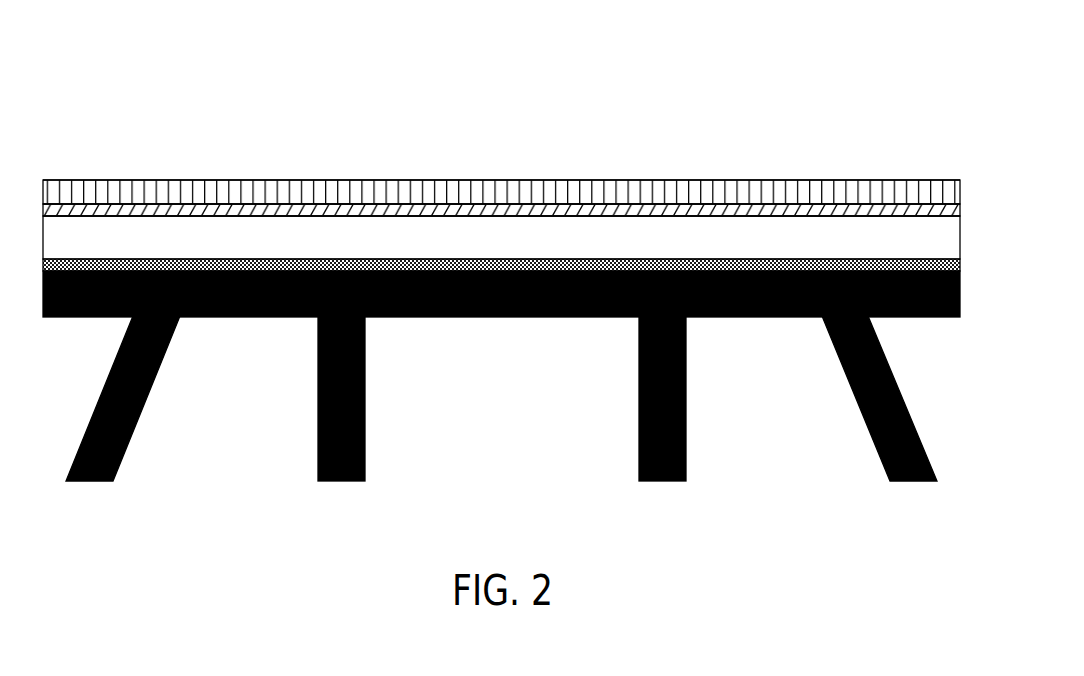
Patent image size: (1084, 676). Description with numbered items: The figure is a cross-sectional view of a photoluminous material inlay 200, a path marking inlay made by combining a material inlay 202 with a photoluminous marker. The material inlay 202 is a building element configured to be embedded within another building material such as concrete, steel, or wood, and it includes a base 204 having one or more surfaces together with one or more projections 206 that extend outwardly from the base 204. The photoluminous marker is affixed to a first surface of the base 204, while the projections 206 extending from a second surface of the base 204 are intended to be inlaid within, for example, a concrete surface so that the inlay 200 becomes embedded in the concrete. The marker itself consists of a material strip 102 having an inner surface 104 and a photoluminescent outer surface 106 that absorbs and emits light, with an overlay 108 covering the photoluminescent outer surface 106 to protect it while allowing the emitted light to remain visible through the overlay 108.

The photoluminous material inlay 200 is at (263, 69).
The material strip 102 is at (707, 238).
The inner surface 104 is at (207, 260).
The photoluminescent outer surface 106 is at (547, 208).
The overlay 108 is at (319, 192).
The material inlay 202 is at (597, 370).
The base 204 is at (398, 317).
The projections 206 is at (686, 421).